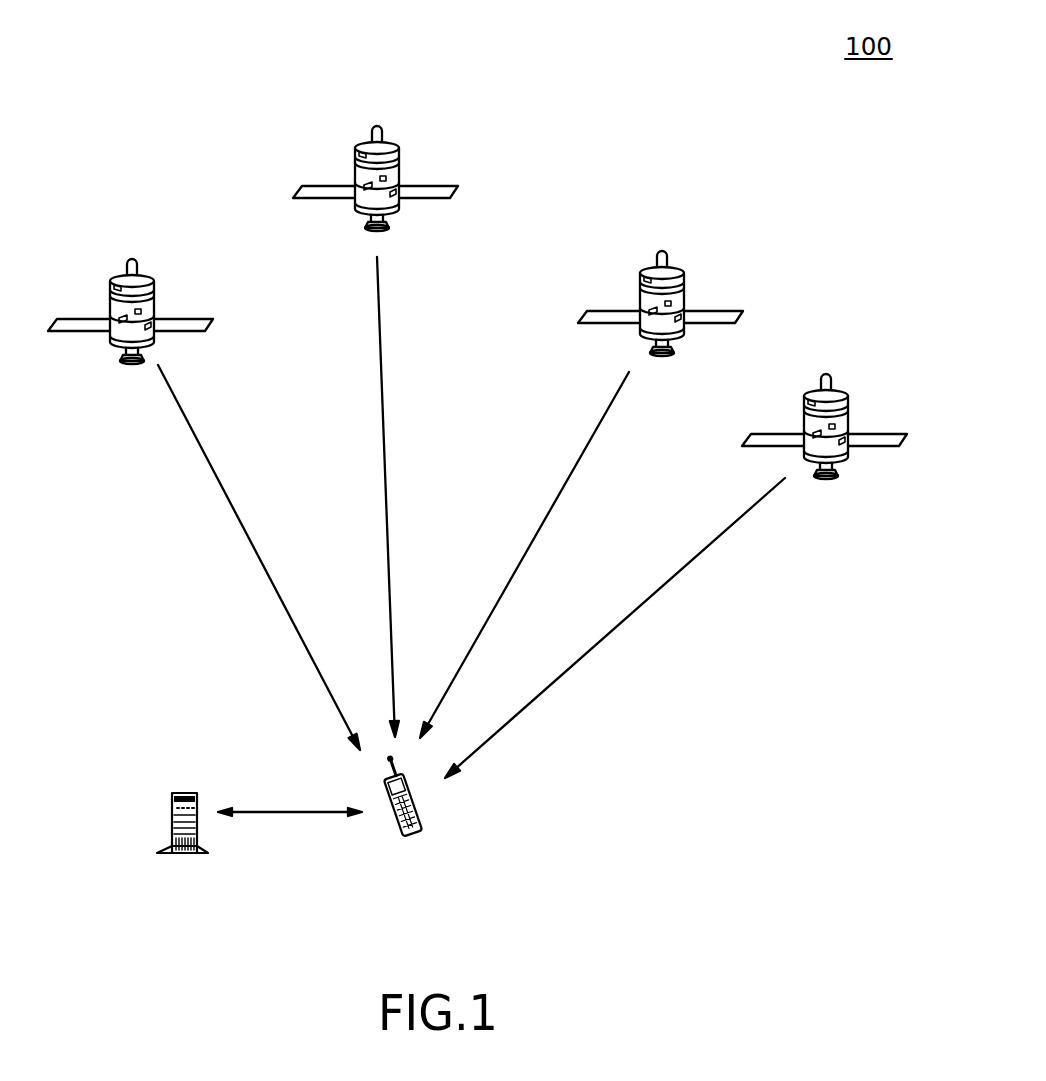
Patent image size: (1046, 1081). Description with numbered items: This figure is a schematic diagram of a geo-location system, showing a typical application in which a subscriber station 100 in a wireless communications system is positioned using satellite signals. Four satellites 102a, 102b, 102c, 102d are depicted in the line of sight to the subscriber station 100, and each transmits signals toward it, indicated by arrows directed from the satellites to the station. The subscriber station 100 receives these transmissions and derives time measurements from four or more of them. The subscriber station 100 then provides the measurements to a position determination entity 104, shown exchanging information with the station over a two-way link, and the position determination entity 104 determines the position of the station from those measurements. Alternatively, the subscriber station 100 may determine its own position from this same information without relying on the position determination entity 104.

The subscriber station 100 is at (400, 835).
The satellite 102a is at (155, 292).
The satellite 102b is at (400, 160).
The satellite 102c is at (683, 290).
The satellite 102d is at (848, 413).
The position determination entity 104 is at (188, 793).